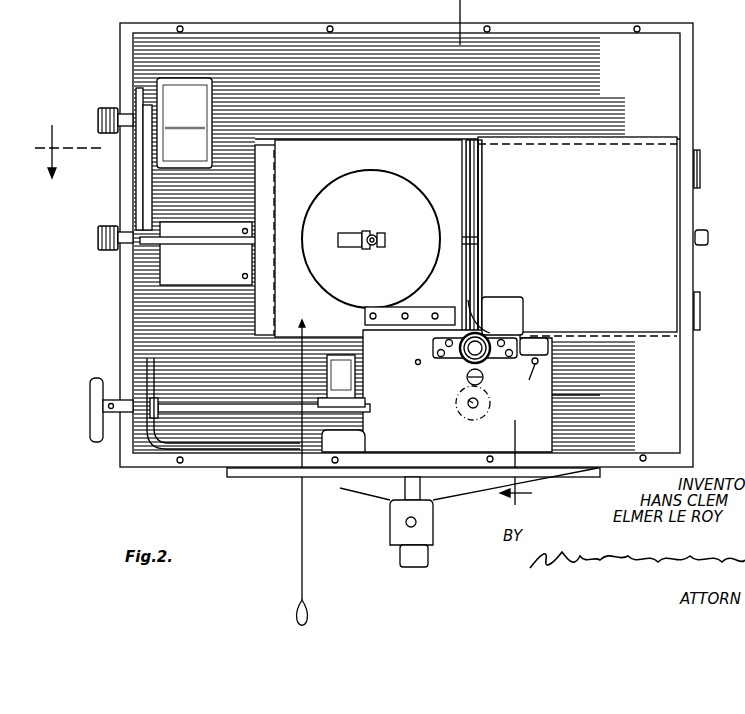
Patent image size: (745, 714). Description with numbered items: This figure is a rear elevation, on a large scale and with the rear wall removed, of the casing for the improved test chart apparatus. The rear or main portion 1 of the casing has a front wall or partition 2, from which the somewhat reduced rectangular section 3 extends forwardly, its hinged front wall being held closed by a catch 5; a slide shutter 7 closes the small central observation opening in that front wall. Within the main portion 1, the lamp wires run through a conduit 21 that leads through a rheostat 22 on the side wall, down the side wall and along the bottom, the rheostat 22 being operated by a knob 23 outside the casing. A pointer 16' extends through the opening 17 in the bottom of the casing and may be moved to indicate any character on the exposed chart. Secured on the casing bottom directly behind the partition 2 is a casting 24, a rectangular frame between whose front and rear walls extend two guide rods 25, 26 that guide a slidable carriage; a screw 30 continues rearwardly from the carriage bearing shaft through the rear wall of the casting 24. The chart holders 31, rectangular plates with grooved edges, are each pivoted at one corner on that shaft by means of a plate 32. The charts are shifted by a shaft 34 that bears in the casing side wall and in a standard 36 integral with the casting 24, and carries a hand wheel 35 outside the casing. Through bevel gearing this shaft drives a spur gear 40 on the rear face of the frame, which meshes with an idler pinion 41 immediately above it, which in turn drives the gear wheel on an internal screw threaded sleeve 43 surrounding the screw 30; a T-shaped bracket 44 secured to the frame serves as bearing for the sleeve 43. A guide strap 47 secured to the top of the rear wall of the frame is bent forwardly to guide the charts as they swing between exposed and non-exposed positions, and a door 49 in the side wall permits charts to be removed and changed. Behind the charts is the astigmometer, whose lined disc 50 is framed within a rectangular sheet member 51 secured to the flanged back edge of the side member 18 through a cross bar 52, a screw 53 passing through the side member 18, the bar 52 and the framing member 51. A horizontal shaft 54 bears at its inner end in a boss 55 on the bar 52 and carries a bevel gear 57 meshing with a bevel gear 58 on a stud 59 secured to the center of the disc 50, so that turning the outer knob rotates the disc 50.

The rear or main portion of casing 1 is at (690, 118).
The front wall or partition 2 is at (467, 116).
The reduced rectangular section 3 is at (56, 151).
The catch 5 is at (516, 468).
The slide shutter 7 is at (333, 238).
The pointer 16' is at (318, 472).
The opening in bottom of casing 17 is at (290, 480).
The side member 18 is at (258, 180).
The conduit 21 is at (200, 448).
The rheostat 22 is at (184, 123).
The knob 23 is at (98, 116).
The casting 24 is at (553, 398).
The guide rod 25 is at (417, 365).
The guide rod 26 is at (528, 379).
The screw 30 is at (465, 362).
The chart holder 31 is at (571, 236).
The plate 32 is at (523, 313).
The shaft 34 is at (226, 403).
The hand wheel 35 is at (90, 392).
The standard 36 is at (104, 250).
The spur gear 40 is at (490, 406).
The idler pinion 41 is at (484, 377).
The internal screw threaded sleeve 43 is at (484, 322).
The T-shaped bracket 44 is at (433, 348).
The guide strap 47 is at (425, 311).
The door 49 is at (700, 186).
The disc 50 is at (425, 200).
The rectangular sheet member 51 is at (368, 238).
The cross bar 52 is at (322, 276).
The screw 53 is at (271, 240).
The horizontal shaft 54 is at (200, 250).
The boss 55 is at (352, 248).
The bevel gear 57 is at (366, 232).
The bevel gear 58 is at (377, 233).
The stud 59 is at (380, 248).